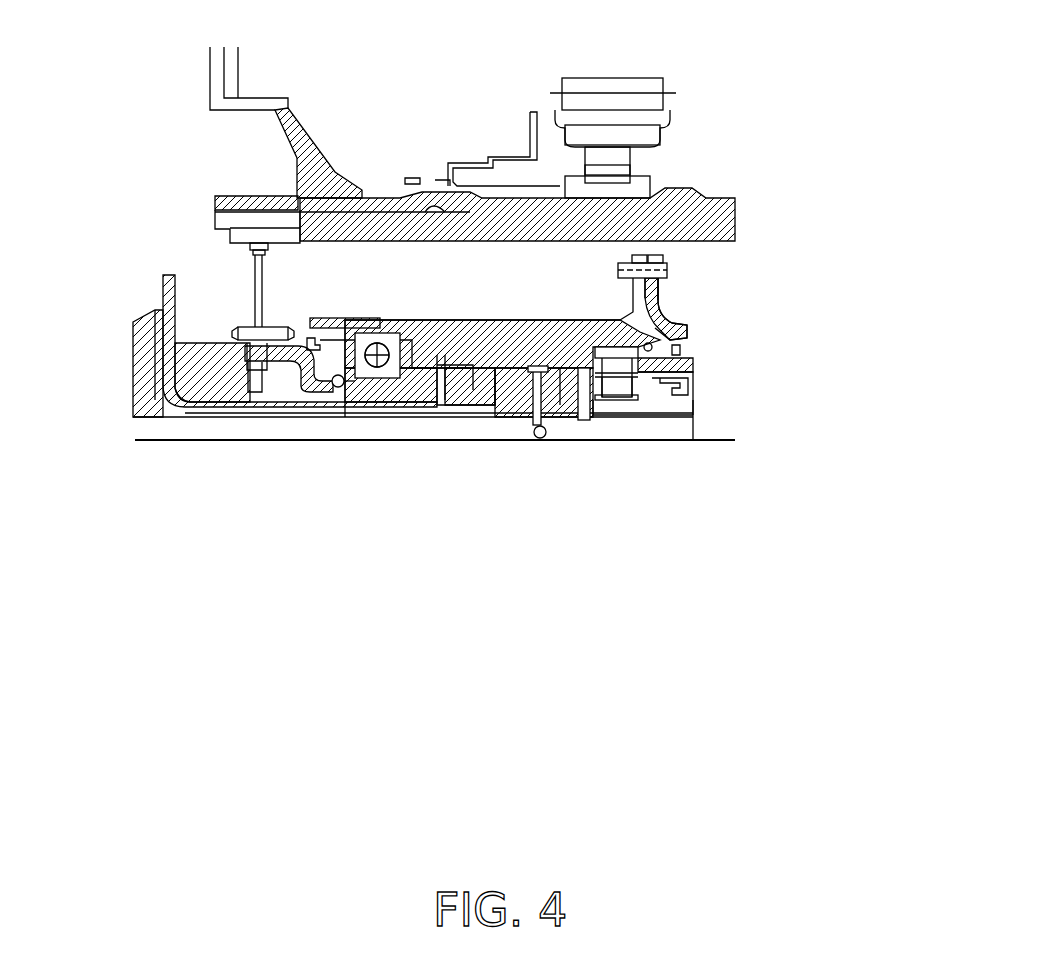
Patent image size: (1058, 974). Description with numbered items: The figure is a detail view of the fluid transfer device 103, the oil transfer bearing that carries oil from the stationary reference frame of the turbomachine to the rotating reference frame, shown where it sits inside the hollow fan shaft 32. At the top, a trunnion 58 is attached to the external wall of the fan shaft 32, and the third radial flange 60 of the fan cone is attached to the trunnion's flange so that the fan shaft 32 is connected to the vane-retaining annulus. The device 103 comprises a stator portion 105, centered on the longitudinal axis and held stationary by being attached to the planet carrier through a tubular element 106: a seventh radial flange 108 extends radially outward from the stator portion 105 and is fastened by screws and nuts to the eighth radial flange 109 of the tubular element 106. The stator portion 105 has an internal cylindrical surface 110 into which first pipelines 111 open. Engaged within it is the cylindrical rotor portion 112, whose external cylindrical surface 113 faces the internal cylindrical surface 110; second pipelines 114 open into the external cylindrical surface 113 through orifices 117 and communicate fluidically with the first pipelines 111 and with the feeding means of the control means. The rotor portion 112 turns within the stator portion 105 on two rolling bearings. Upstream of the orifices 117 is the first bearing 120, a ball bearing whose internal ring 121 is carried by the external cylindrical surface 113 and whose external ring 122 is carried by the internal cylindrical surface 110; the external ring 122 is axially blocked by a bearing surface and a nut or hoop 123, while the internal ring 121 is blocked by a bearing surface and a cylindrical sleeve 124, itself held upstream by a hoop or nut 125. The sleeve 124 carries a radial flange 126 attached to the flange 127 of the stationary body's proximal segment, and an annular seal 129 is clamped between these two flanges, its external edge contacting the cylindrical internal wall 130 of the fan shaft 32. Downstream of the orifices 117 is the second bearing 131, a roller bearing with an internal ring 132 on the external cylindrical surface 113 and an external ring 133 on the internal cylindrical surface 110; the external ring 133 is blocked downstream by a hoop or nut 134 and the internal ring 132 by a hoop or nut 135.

The fan shaft 32 is at (733, 205).
The trunnion 58 is at (248, 380).
The third radial flange 60 is at (238, 57).
The fluid transfer device 103 is at (490, 446).
The stator portion 105 is at (491, 520).
The tubular element 106 is at (687, 330).
The seventh radial flange 108 is at (652, 346).
The eighth radial flange 109 is at (652, 306).
The internal cylindrical surface 110 is at (584, 380).
The first pipelines 111 is at (500, 342).
The rotor portion 112 is at (476, 408).
The external cylindrical surface 113 is at (425, 363).
The second pipelines 114 is at (541, 446).
The orifices 117 is at (572, 405).
The first bearing 120 is at (340, 340).
The internal ring 121 is at (390, 380).
The external ring 122 is at (377, 343).
The nut or hoop 123 is at (350, 384).
The cylindrical sleeve 124 is at (315, 380).
The hoop or nut 125 is at (262, 374).
The radial flange 126 is at (275, 394).
The flange 127 is at (250, 330).
The annular seal 129 is at (257, 287).
The cylindrical internal wall 130 is at (457, 252).
The second bearing 131 is at (612, 400).
The internal ring 132 is at (626, 400).
The external ring 133 is at (705, 430).
The hoop or nut 134 is at (695, 360).
The hoop or nut 135 is at (700, 410).